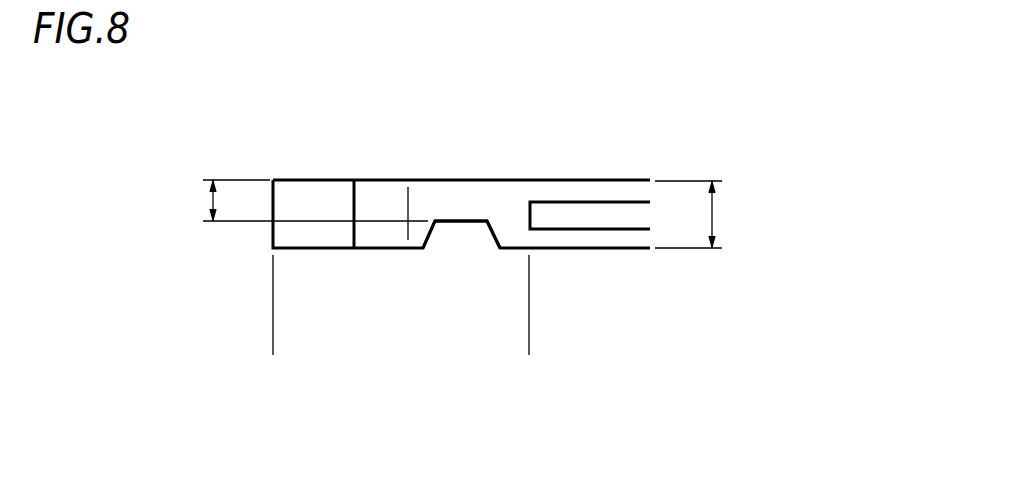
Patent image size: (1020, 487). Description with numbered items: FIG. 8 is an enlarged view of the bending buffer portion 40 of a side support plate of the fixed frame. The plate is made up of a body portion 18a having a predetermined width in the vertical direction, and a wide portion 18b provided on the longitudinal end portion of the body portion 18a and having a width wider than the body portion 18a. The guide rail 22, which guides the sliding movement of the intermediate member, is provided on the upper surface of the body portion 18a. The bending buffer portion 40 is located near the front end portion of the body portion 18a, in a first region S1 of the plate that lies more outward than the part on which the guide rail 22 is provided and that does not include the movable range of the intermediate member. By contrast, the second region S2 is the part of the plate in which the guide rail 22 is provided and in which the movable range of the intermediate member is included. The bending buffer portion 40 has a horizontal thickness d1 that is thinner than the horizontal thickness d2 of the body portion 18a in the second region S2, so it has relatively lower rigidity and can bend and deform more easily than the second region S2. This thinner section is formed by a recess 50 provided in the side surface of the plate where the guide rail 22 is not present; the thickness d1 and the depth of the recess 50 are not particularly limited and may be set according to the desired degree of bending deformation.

The bending buffer portion 40 is at (458, 172).
The wide portion 18b is at (340, 190).
The body portion 18a is at (570, 183).
The guide rail 22 is at (617, 211).
The recess 50 is at (493, 240).
The horizontal thickness of the bending buffer portion d1 is at (297, 200).
The horizontal thickness of the body portion d2 is at (705, 214).
The first region S1 is at (393, 372).
The second region S2 is at (626, 380).